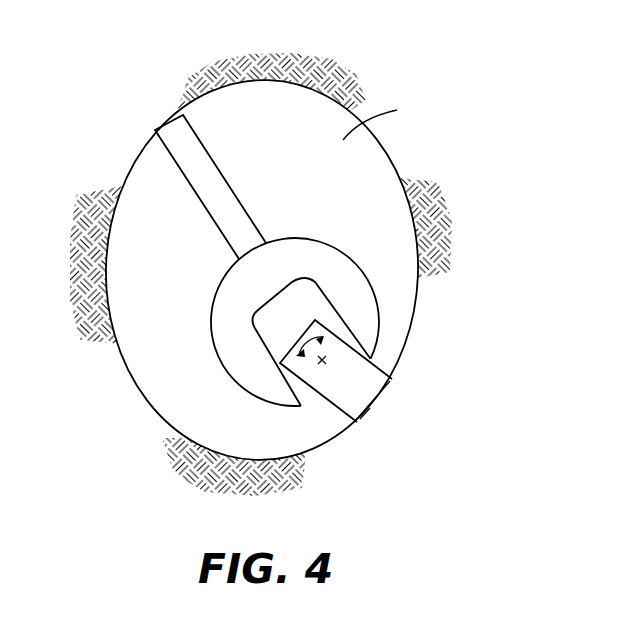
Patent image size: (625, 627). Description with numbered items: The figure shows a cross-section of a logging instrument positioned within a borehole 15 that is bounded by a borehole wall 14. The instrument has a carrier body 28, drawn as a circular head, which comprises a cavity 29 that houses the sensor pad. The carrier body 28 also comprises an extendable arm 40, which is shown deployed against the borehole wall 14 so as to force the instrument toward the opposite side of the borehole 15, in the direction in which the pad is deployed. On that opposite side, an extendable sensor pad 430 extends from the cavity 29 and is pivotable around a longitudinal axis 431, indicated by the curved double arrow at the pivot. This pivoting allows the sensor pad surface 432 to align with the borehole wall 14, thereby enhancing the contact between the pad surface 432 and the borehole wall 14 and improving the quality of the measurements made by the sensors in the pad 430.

The borehole wall 14 is at (385, 156).
The borehole 15 is at (385, 119).
The extendable arm 40 is at (163, 147).
The carrier body 28 is at (378, 310).
The cavity 29 is at (330, 300).
The extendable sensor pad 430 is at (326, 360).
The longitudinal axis 431 is at (383, 383).
The sensor pad surface 432 is at (370, 408).